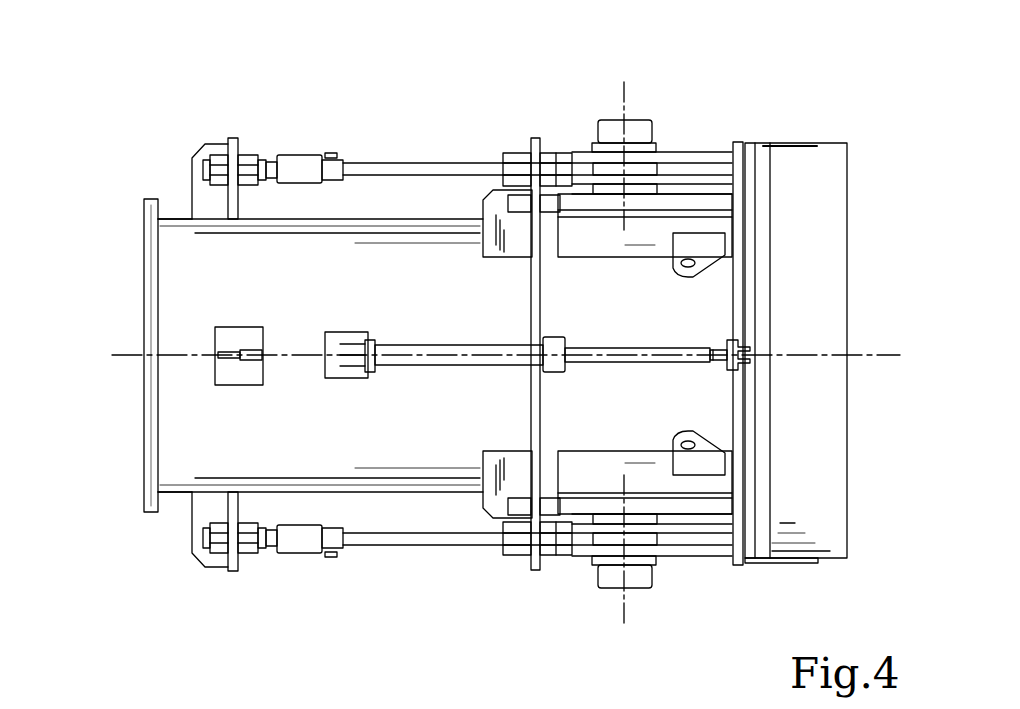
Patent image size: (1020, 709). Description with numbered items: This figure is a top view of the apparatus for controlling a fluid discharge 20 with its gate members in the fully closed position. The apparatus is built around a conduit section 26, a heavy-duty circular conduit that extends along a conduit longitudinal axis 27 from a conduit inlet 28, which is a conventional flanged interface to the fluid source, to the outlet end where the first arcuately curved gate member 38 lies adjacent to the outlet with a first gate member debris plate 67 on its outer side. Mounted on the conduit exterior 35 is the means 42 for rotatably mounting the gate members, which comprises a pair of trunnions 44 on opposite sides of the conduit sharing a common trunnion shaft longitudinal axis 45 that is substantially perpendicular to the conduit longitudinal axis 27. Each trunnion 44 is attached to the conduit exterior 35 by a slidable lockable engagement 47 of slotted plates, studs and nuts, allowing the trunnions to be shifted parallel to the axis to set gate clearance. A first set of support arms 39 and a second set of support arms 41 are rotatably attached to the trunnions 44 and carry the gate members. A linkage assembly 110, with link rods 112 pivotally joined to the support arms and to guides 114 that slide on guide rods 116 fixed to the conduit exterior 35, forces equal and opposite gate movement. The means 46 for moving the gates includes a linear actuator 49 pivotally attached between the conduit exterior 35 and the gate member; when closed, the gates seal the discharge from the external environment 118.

The apparatus for controlling a fluid discharge 20 is at (812, 80).
The conduit section 26 is at (178, 512).
The conduit longitudinal axis 27 is at (850, 358).
The conduit inlet 28 is at (144, 220).
The conduit exterior 35 is at (445, 355).
The first arcuately curved gate member 38 is at (745, 142).
The first set of support arms 39 is at (700, 150).
The second set of support arms 41 is at (572, 150).
The means for rotatably mounting 42 is at (297, 155).
The trunnion 44 is at (612, 120).
The trunnion shaft longitudinal axis 45 is at (626, 88).
The means for moving 46 is at (412, 345).
The slidable lockable engagement 47 is at (585, 213).
The linear actuator 49 is at (492, 345).
The first gate member debris plate 67 is at (796, 353).
The linkage assembly 110 is at (280, 156).
The link rod 112 is at (425, 163).
The guide 114 is at (272, 158).
The guide rod 116 is at (270, 185).
The external environment 118 is at (832, 602).